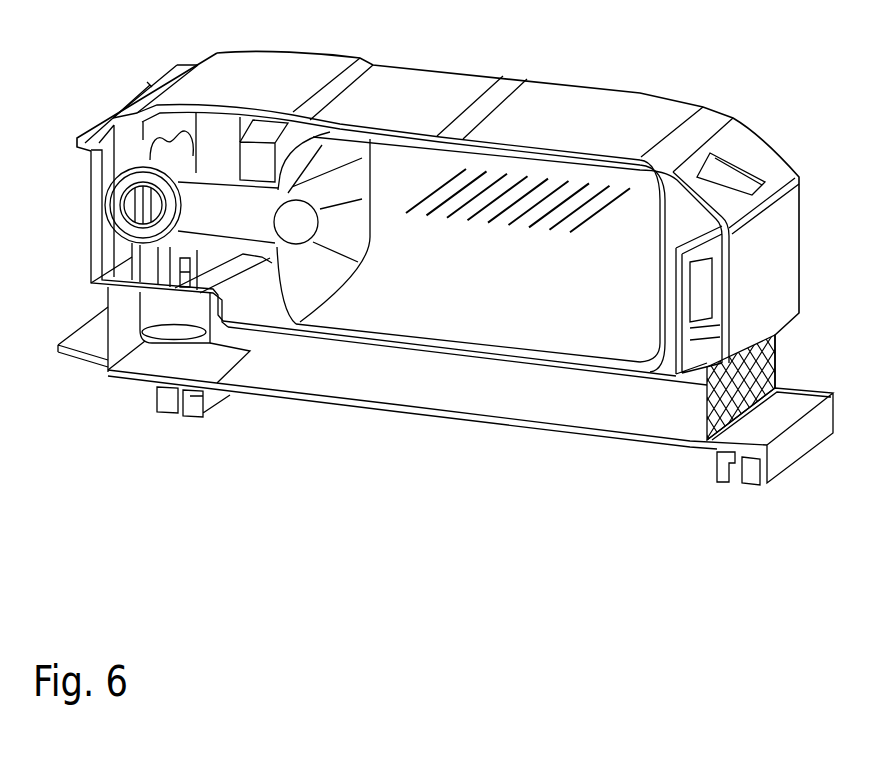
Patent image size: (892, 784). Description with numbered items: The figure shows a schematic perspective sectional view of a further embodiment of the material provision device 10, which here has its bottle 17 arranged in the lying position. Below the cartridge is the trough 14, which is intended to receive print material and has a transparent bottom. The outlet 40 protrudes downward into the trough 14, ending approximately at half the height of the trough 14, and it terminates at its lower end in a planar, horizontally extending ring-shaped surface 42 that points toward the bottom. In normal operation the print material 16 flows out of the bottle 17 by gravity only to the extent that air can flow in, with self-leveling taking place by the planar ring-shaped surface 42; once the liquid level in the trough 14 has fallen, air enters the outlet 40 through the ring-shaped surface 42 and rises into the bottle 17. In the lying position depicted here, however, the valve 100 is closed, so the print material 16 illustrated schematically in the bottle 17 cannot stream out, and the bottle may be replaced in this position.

The material provision device 10 is at (283, 522).
The trough 14 is at (480, 392).
The print material 16 is at (600, 153).
The bottle 17 is at (501, 185).
The outlet 40 is at (166, 319).
The ring-shaped surface 42 is at (165, 348).
The valve 100 is at (90, 203).